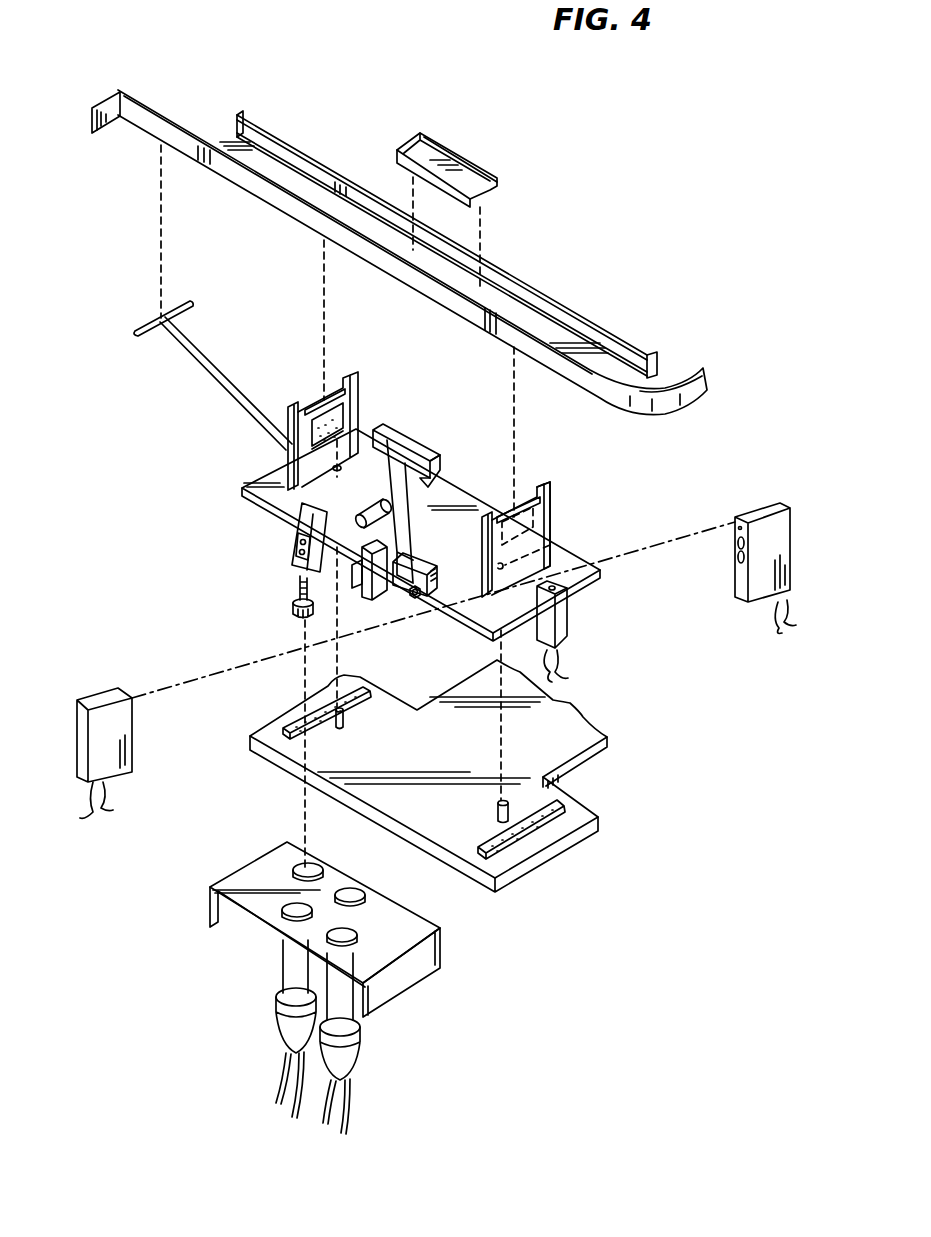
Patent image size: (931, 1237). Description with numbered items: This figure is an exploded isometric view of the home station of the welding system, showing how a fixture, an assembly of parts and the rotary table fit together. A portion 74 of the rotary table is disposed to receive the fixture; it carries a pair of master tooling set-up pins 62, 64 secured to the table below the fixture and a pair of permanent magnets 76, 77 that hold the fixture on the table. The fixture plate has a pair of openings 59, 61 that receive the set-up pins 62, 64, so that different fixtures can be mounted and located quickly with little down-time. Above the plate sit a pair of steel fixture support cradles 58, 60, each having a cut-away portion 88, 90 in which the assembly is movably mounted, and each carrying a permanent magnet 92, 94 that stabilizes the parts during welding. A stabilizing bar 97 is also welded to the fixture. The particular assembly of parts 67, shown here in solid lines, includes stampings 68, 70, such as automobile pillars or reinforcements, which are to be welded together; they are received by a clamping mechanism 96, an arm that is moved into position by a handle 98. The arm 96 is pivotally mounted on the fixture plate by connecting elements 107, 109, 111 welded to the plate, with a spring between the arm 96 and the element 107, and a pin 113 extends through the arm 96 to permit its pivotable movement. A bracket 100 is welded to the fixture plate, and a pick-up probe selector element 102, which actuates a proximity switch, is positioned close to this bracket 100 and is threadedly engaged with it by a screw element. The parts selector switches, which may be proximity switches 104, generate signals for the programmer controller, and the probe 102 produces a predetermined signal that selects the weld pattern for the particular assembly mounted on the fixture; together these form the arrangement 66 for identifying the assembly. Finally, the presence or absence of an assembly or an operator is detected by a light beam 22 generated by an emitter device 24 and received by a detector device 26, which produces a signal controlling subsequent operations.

The light beam 22 is at (197, 645).
The emitter device 24 is at (123, 731).
The detector device 26 is at (795, 487).
The fixture support cradle 58 is at (540, 513).
The opening 59 is at (335, 468).
The fixture support cradle 60 is at (357, 377).
The opening 61 is at (550, 545).
The master tooling set-up pin 62 is at (346, 718).
The master tooling set-up pin 64 is at (506, 803).
The arrangement 66 is at (450, 952).
The assembly of parts 67 is at (543, 215).
The stamping 68 is at (617, 330).
The stamping 70 is at (456, 157).
The portion of the rotary table 74 is at (572, 840).
The permanent magnet 76 is at (290, 732).
The permanent magnet 77 is at (563, 806).
The cut-away portion 88 is at (312, 402).
The cut-away portion 90 is at (528, 483).
The magnet 92 is at (350, 405).
The magnet 94 is at (511, 510).
The clamping mechanism 96 is at (387, 528).
The stabilizing bar 97 is at (226, 378).
The handle 98 is at (395, 468).
The bracket 100 is at (300, 533).
The pick-up probe selector element 102 is at (292, 605).
The proximity switches 104 is at (337, 990).
The connecting element 107 is at (368, 598).
The connecting element 109 is at (363, 583).
The connecting element 111 is at (450, 528).
The pin 113 is at (413, 598).